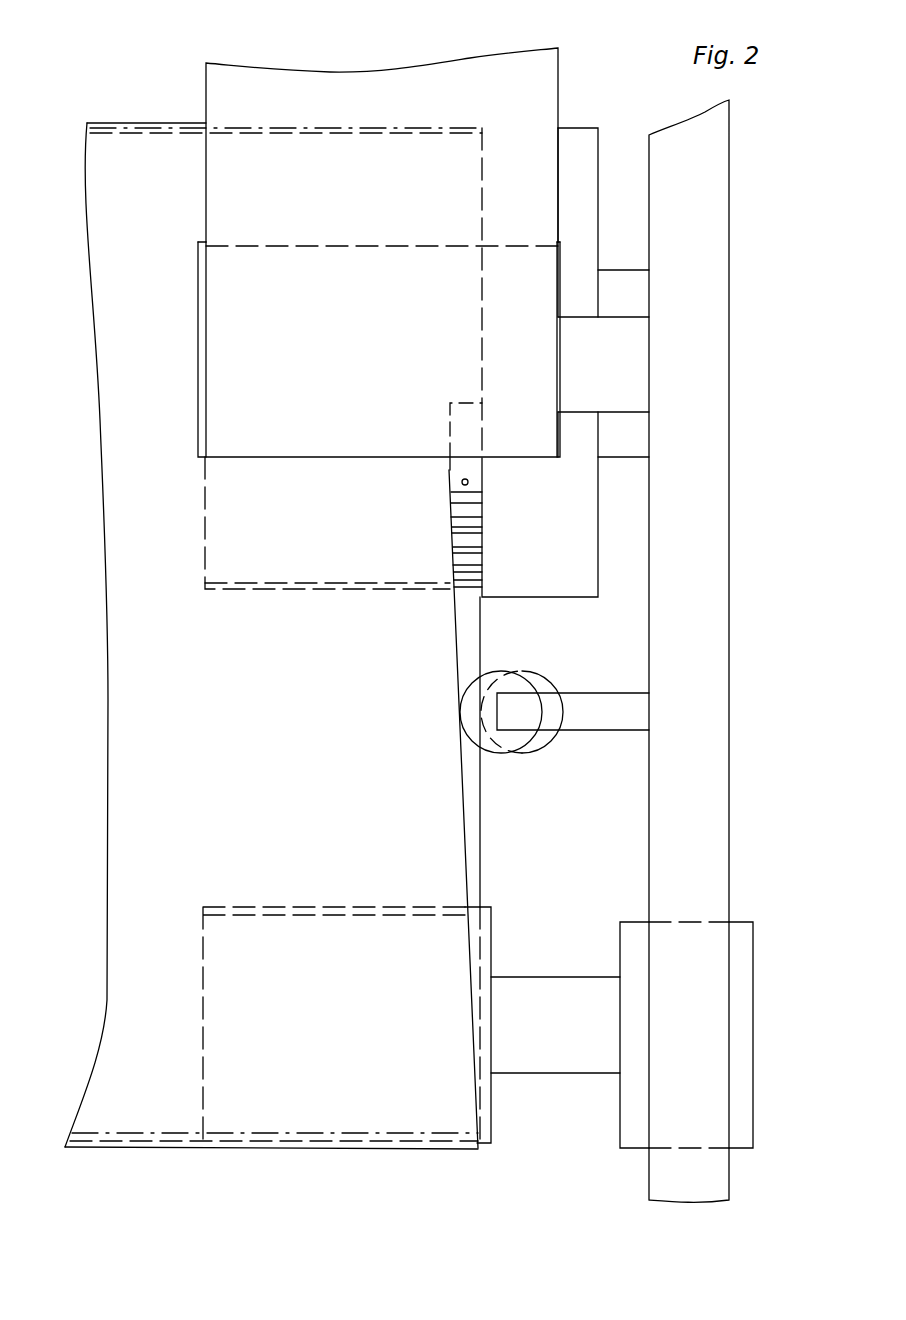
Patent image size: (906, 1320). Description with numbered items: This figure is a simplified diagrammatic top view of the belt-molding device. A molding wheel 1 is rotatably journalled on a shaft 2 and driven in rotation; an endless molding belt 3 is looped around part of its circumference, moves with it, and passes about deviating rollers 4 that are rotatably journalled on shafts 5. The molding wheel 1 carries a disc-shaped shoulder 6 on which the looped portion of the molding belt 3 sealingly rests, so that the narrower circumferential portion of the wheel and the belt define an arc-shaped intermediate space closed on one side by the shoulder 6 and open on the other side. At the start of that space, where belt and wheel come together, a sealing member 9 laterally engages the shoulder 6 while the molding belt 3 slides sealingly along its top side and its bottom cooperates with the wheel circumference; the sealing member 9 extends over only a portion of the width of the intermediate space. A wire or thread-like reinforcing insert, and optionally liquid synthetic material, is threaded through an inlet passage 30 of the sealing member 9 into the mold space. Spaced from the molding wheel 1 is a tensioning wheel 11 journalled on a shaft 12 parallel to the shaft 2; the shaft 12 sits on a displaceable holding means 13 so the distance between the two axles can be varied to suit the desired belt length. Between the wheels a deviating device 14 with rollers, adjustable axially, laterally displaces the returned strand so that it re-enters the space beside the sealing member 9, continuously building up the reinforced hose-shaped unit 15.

The molding wheel 1 is at (300, 572).
The shaft 2 is at (626, 437).
The molding belt 3 is at (528, 87).
The deviating rollers 4 is at (202, 315).
The shafts 5 is at (624, 330).
The disc-shaped shoulder 6 is at (570, 148).
The sealing member 9 is at (463, 467).
The tensioning wheel 11 is at (345, 930).
The shaft 12 is at (543, 1000).
The holding means 13 is at (733, 982).
The deviating device 14 is at (530, 735).
The hose-shaped unit 15 is at (130, 644).
The inlet passage 30 is at (462, 482).